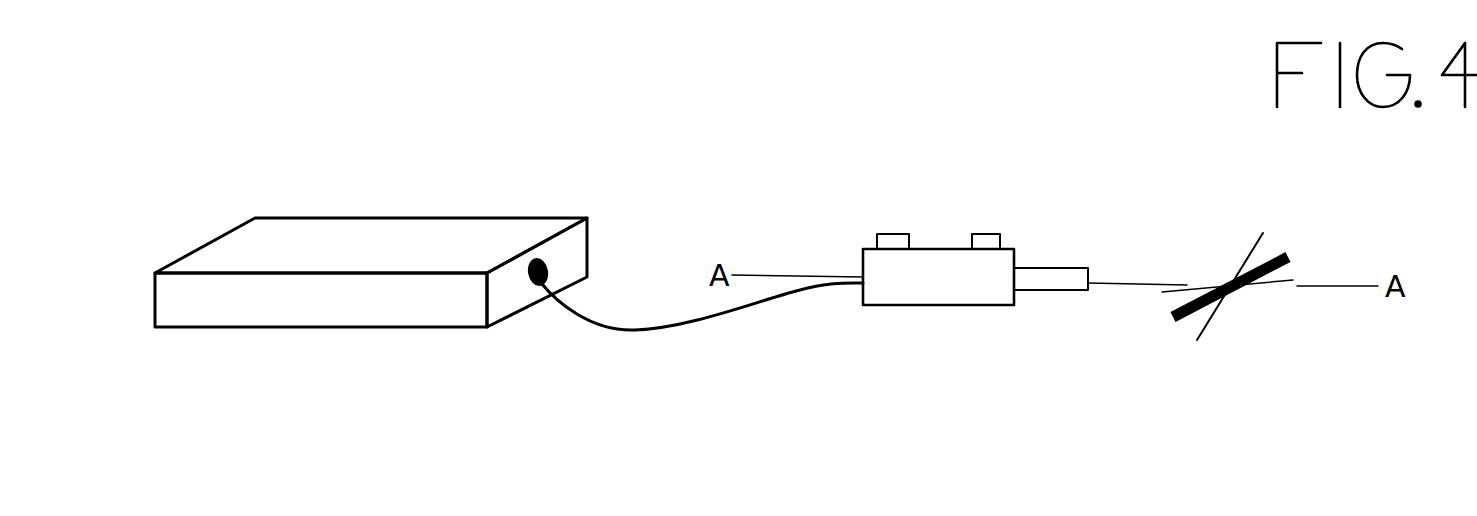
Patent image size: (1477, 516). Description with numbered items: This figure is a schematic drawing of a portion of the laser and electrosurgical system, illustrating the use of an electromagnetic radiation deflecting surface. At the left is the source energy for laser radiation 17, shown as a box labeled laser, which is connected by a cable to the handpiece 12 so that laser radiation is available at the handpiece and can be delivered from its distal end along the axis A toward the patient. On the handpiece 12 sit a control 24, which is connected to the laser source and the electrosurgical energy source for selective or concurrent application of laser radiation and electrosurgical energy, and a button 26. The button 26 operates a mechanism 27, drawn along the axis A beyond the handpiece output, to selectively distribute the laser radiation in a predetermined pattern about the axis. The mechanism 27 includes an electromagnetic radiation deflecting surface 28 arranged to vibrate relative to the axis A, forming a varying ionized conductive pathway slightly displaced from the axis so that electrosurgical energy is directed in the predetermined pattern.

The source energy for laser radiation 17 is at (403, 217).
The handpiece 12 is at (883, 305).
The control 24 is at (890, 234).
The button 26 is at (987, 234).
The mechanism 27 is at (1293, 223).
The electromagnetic radiation deflecting surface 28 is at (1235, 292).